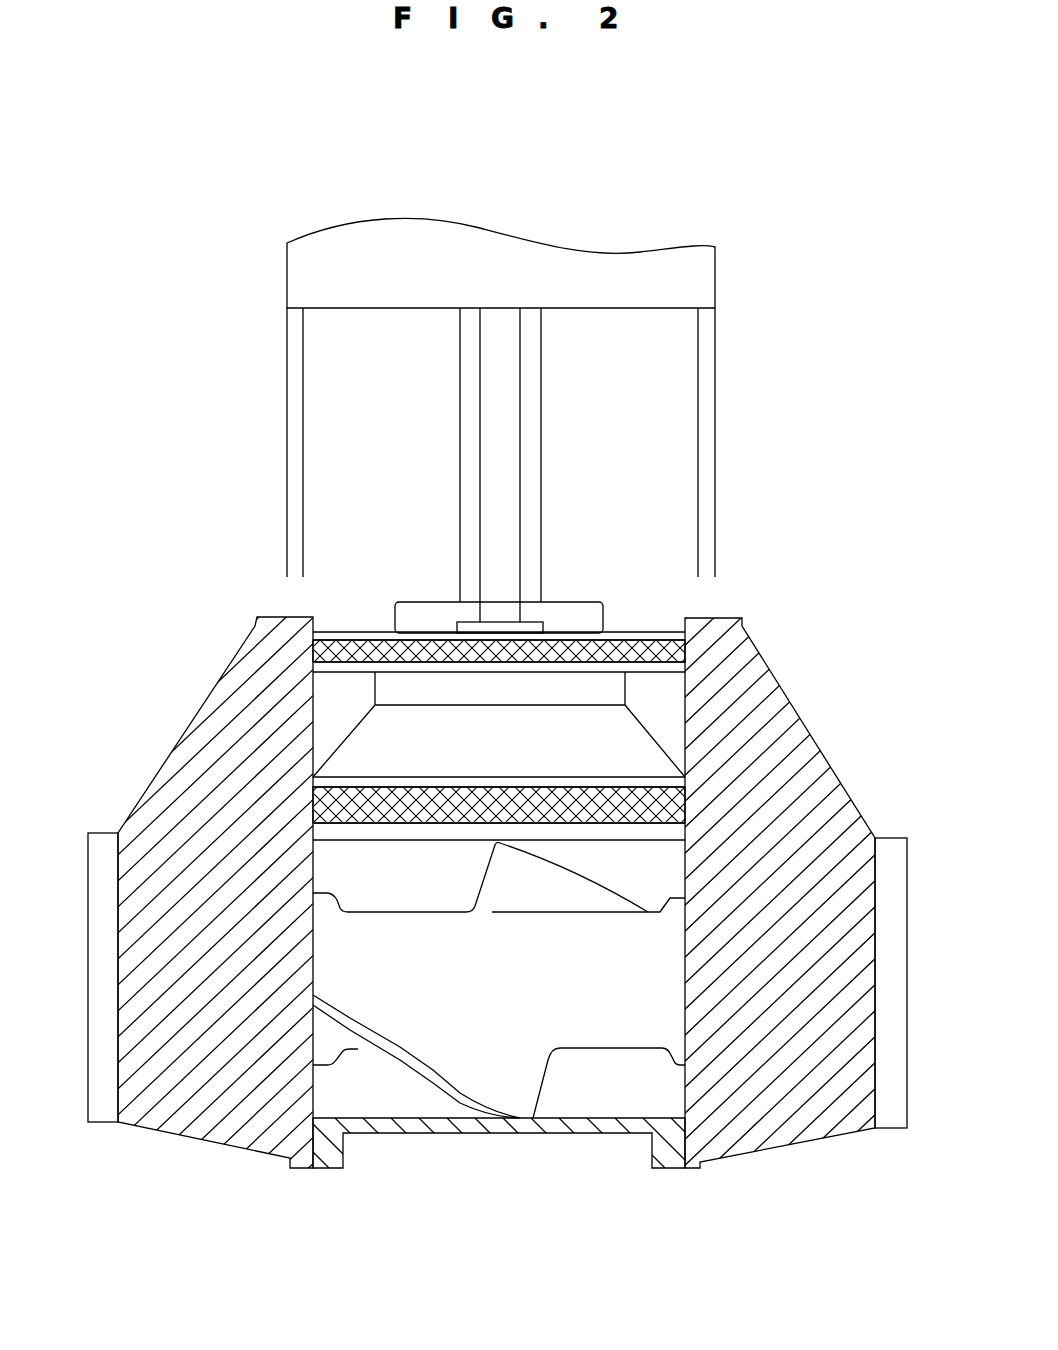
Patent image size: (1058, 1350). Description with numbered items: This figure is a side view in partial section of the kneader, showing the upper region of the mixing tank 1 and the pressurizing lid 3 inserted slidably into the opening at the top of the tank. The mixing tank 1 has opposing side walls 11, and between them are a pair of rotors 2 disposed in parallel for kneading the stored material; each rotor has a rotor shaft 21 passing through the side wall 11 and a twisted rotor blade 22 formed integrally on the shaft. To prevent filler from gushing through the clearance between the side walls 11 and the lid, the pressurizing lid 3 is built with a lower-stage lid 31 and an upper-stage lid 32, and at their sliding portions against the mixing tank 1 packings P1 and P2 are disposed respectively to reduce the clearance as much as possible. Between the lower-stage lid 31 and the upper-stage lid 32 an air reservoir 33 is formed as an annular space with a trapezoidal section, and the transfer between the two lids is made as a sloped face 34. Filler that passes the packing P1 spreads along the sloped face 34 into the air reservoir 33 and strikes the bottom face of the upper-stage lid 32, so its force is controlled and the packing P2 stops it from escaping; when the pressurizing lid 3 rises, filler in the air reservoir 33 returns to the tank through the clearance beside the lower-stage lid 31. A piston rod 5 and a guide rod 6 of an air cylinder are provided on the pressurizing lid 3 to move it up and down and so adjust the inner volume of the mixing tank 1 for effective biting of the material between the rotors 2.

The mixing tank 1 is at (417, 1103).
The rotors 2 is at (468, 1230).
The rotor shafts 21 is at (485, 958).
The rotor blade 22 is at (523, 1085).
The pressurizing lid 3 is at (499, 568).
The lower-stage lid 31 is at (499, 867).
The upper-stage lid 32 is at (419, 617).
The air reservoir 33 is at (657, 704).
The sloped face 34 is at (657, 745).
The piston rod 5 is at (470, 441).
The guide rod 6 is at (500, 458).
The side walls 11 is at (315, 713).
The packing P1 is at (447, 813).
The packing P2 is at (565, 650).